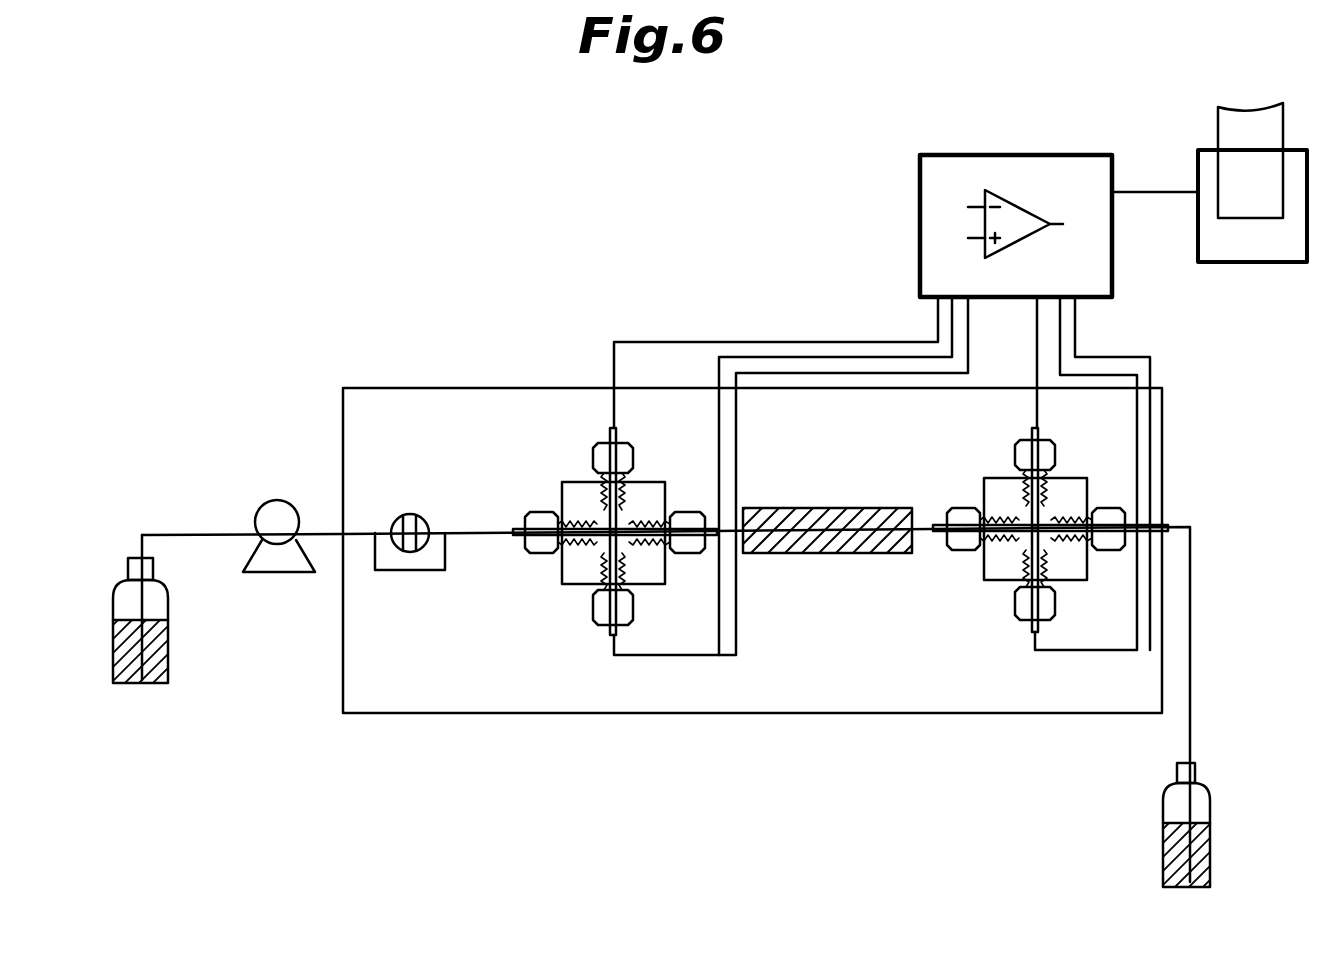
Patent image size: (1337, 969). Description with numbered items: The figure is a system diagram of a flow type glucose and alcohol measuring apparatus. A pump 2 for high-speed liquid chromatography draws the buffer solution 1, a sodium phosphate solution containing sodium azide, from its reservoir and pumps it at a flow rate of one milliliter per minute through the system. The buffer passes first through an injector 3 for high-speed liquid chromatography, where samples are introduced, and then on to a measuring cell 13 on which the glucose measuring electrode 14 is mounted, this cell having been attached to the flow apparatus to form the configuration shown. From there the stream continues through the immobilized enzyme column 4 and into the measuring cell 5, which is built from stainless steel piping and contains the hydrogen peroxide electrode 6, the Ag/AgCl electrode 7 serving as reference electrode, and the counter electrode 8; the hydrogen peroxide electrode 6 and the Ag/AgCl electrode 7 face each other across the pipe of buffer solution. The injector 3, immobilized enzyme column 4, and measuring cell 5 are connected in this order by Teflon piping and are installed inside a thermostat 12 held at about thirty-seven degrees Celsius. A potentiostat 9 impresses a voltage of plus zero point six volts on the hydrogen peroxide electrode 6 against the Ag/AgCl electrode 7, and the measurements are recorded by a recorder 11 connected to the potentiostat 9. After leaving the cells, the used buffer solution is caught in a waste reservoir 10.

The buffer solution 1 is at (125, 585).
The pump 2 is at (280, 572).
The injector 3 is at (415, 525).
The immobilized enzyme column 4 is at (838, 553).
The measuring cell 5 is at (985, 583).
The hydrogen peroxide electrode 6 is at (1058, 443).
The Ag/AgCl electrode 7 is at (600, 627).
The counter electrode 8 is at (712, 545).
The potentiostat 9 is at (920, 188).
The waste reservoir 10 is at (1198, 796).
The recorder 11 is at (1207, 252).
The thermostat 12 is at (403, 388).
The measuring cell 13 is at (572, 593).
The glucose measuring electrode 14 is at (633, 447).